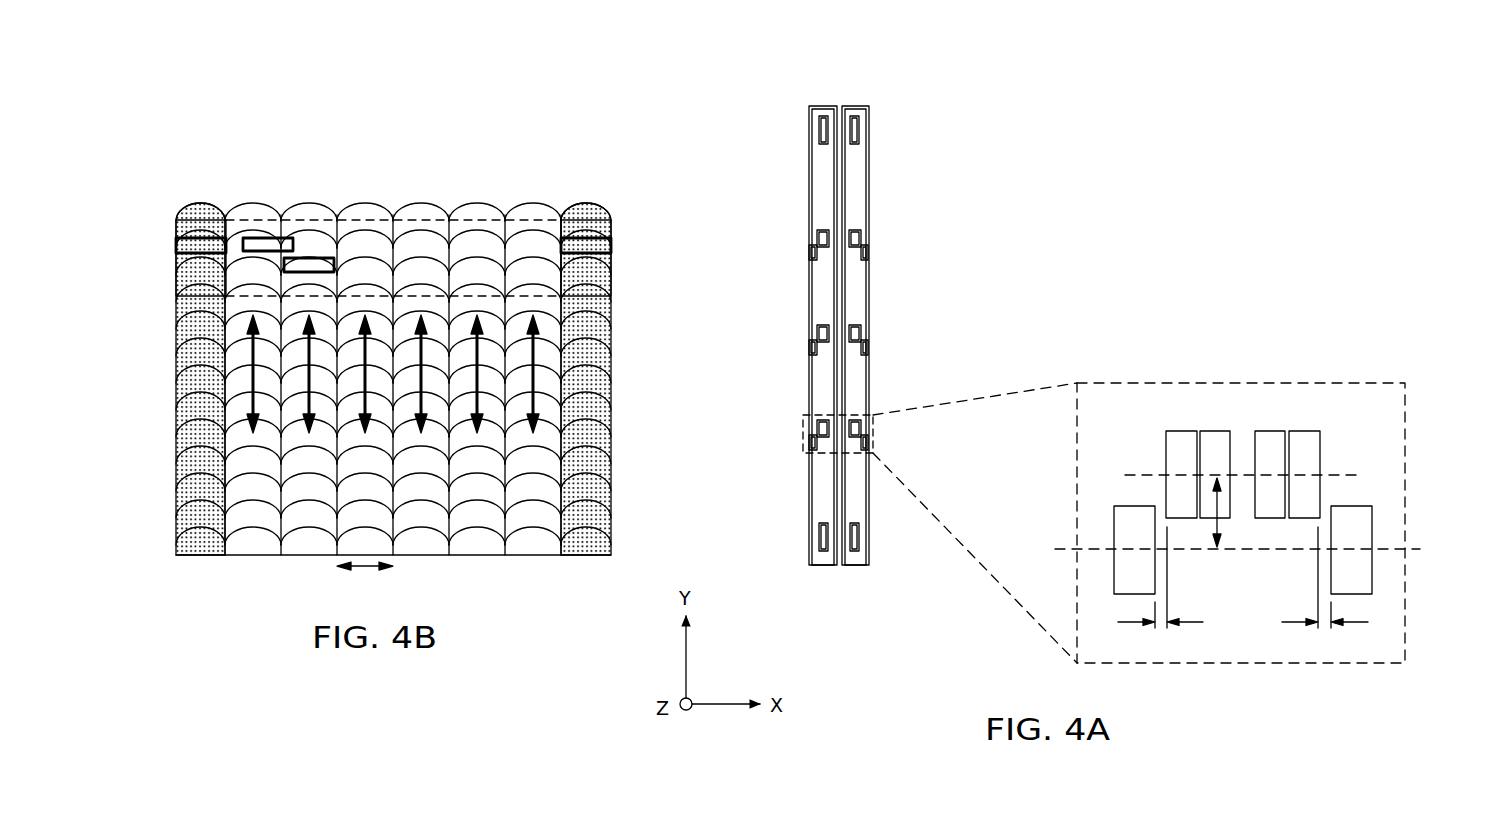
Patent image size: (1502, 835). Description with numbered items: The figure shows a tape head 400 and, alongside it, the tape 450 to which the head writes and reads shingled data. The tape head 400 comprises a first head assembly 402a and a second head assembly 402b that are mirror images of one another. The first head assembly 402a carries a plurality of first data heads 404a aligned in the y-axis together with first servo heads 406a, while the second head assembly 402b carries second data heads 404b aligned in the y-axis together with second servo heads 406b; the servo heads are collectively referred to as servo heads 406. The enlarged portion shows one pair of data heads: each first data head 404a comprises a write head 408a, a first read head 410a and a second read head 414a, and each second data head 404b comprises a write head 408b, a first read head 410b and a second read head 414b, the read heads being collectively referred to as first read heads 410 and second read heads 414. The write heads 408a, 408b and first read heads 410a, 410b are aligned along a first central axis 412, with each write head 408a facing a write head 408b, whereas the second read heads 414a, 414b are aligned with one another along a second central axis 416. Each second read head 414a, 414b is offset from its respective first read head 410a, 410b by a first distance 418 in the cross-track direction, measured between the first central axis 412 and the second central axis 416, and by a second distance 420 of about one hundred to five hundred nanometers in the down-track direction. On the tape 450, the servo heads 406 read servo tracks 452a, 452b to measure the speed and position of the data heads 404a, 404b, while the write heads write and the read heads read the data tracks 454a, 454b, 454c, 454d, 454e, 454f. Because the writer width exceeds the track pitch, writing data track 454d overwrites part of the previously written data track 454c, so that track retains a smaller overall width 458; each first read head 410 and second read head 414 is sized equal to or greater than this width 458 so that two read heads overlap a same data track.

In FIG. 4B, the tape head 400 is at (612, 222).
In FIG. 4A, the tape head 400 is at (797, 80).
In FIG. 4A, the first head assembly 402a is at (797, 185).
In FIG. 4A, the second head assembly 402b is at (877, 192).
In FIG. 4A, the first data heads 404a is at (813, 246).
In FIG. 4A, the second data heads 404b is at (865, 246).
In FIG. 4A, the first servo heads 406a is at (819, 136).
In FIG. 4A, the second servo heads 406b is at (857, 136).
In FIG. 4B, the servo heads 406 is at (176, 254).
In FIG. 4A, the write head 408a is at (1213, 438).
In FIG. 4A, the write head 408b is at (1272, 440).
In FIG. 4A, the first read head 410a is at (1180, 445).
In FIG. 4A, the first read head 410b is at (1308, 450).
In FIG. 4B, the first read heads 410 is at (243, 249).
In FIG. 4A, the first central axis 412 is at (1264, 475).
In FIG. 4A, the second read head 414a is at (1120, 533).
In FIG. 4A, the second read head 414b is at (1360, 531).
In FIG. 4B, the second read heads 414 is at (285, 272).
In FIG. 4A, the second central axis 416 is at (1260, 550).
In FIG. 4A, the first distance 418 is at (1217, 508).
In FIG. 4A, the second distance 420 is at (1243, 593).
In FIG. 4B, the tape 450 is at (228, 110).
In FIG. 4B, the servo track 452a is at (200, 357).
In FIG. 4B, the servo track 452b is at (585, 337).
In FIG. 4B, the data track 454a is at (253, 337).
In FIG. 4B, the data track 454b is at (309, 356).
In FIG. 4B, the data track 454c is at (365, 337).
In FIG. 4B, the data track 454d is at (421, 356).
In FIG. 4B, the data track 454e is at (477, 337).
In FIG. 4B, the data track 454f is at (533, 356).
In FIG. 4B, the width 458 is at (365, 581).